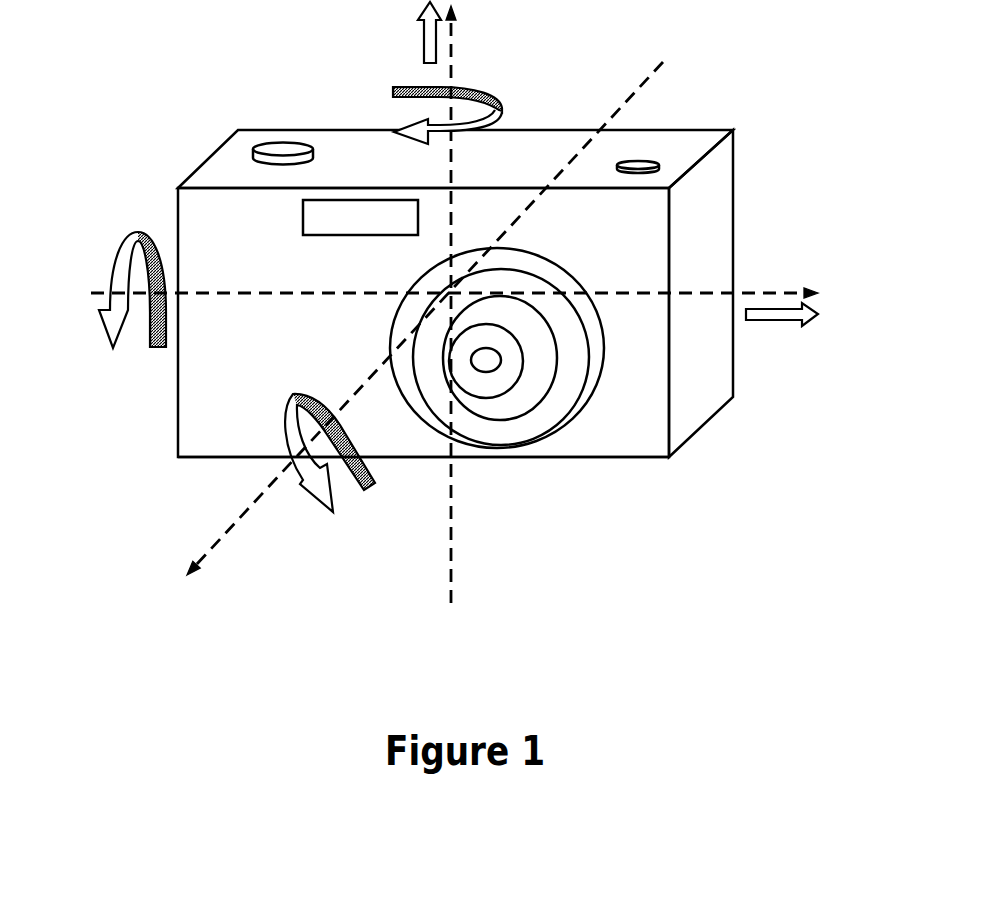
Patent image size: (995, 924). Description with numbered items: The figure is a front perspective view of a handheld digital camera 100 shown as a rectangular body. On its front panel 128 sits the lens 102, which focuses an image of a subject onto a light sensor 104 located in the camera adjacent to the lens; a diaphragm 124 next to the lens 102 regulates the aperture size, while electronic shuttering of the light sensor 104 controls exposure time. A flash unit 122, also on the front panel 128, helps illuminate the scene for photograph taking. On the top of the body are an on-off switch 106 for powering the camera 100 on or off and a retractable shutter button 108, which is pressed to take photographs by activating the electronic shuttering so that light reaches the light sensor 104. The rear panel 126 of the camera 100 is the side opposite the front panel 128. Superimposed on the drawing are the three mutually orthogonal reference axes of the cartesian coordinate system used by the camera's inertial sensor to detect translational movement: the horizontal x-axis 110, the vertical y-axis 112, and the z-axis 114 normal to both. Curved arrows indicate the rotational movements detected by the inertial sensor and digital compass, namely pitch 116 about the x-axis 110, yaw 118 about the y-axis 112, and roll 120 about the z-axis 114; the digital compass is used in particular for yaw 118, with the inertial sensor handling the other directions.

The handheld digital camera 100 is at (733, 372).
The lens 102 is at (490, 358).
The light sensor 104 is at (497, 367).
The on-off switch 106 is at (650, 163).
The shutter button 108 is at (285, 143).
The x-axis 110 is at (803, 263).
The y-axis 112 is at (485, 33).
The z-axis 114 is at (247, 562).
The pitch 116 is at (152, 347).
The yaw 118 is at (393, 85).
The roll 120 is at (373, 488).
The flash unit 122 is at (350, 234).
The diaphragm 124 is at (482, 363).
The rear panel 126 is at (740, 156).
The front panel 128 is at (633, 447).